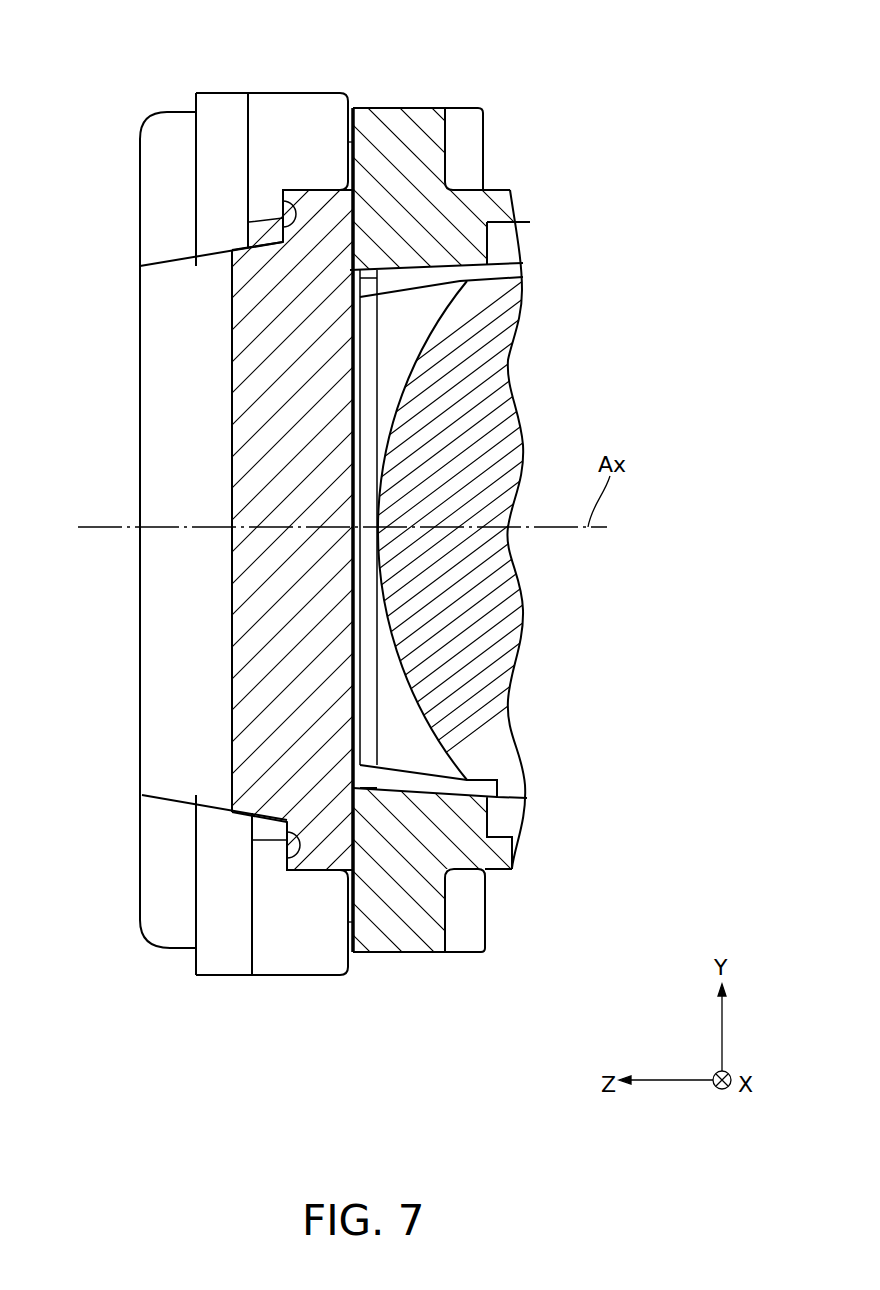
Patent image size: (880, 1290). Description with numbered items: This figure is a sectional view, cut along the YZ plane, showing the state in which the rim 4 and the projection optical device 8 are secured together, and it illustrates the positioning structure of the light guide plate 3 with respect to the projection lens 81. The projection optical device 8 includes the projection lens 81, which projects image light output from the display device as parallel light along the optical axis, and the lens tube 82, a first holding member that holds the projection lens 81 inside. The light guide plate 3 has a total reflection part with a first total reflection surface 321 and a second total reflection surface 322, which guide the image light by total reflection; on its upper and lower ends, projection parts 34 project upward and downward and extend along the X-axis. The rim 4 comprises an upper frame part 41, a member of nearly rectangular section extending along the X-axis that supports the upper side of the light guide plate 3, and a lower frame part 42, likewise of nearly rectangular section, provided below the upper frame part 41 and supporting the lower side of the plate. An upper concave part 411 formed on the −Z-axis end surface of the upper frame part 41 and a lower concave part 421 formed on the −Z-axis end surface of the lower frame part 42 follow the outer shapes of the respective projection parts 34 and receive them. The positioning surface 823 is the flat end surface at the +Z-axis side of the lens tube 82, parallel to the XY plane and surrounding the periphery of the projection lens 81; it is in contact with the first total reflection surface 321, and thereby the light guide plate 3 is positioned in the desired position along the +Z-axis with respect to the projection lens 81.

The light guide plate 3 is at (262, 577).
The first total reflection surface 321 is at (357, 573).
The second total reflection surface 322 is at (232, 436).
The projection part 34 is at (312, 203).
The rim 4 is at (267, 147).
The upper frame part 41 is at (301, 105).
The upper concave part 411 is at (283, 200).
The lower frame part 42 is at (280, 913).
The lower concave part 421 is at (287, 857).
The projection optical device 8 is at (642, 233).
The projection lens 81 is at (497, 334).
The lens tube 82 is at (452, 233).
The positioning surface 823 is at (350, 873).